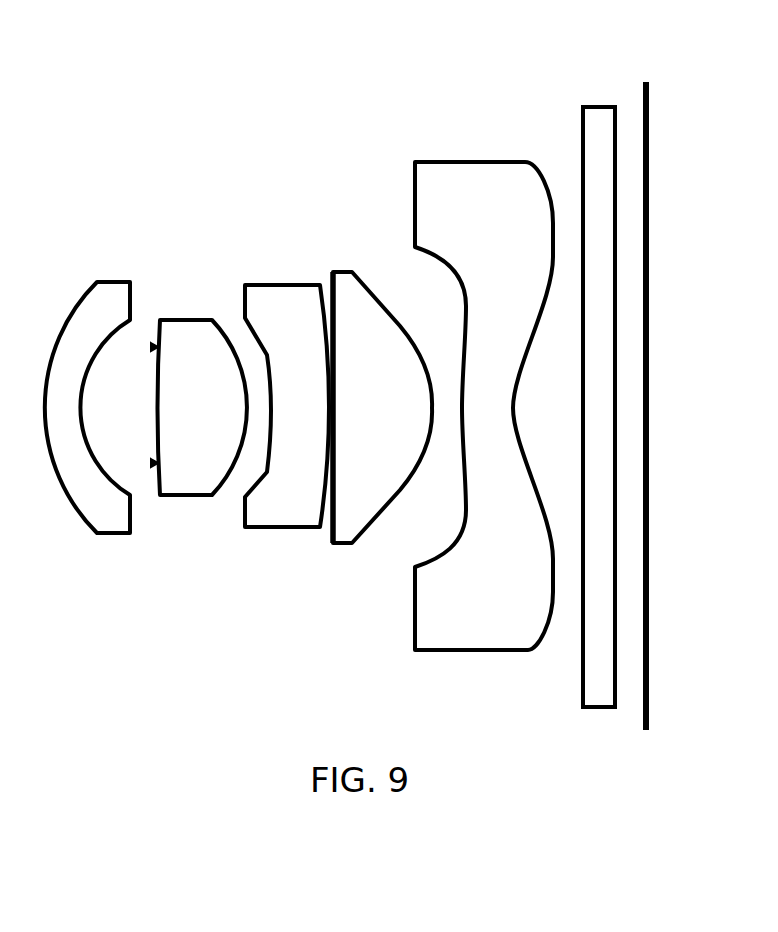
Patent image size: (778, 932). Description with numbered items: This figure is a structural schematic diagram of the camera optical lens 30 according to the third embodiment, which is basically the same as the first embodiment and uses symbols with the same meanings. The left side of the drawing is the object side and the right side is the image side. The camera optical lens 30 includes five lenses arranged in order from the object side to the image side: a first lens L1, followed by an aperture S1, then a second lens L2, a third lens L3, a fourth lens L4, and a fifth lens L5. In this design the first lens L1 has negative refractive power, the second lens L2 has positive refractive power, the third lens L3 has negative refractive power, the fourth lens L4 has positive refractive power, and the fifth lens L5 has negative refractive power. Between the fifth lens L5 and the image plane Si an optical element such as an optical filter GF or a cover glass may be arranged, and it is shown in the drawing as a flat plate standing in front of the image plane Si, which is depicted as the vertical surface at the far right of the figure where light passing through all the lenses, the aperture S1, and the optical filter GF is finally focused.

The camera optical lens 30 is at (356, 27).
The first lens L1 is at (87, 393).
The aperture S1 is at (144, 392).
The second lens L2 is at (202, 394).
The third lens L3 is at (287, 393).
The fourth lens L4 is at (380, 393).
The fifth lens L5 is at (484, 391).
The optical filter GF is at (598, 394).
The image plane Si is at (644, 394).